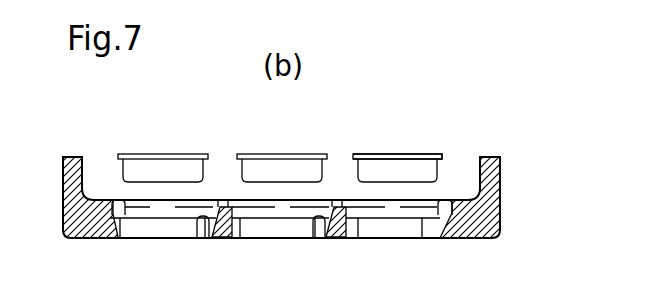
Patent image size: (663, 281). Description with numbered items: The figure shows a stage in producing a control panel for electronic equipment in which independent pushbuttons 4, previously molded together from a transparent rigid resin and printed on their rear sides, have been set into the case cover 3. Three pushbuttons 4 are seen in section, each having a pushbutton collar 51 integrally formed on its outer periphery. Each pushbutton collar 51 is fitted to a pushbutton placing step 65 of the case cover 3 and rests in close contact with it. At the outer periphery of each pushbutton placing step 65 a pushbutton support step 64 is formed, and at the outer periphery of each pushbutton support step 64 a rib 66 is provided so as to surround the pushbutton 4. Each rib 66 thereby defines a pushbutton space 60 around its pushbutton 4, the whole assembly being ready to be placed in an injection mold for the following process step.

The case cover 3 is at (500, 193).
The pushbutton 4 is at (143, 153).
The pushbutton collar 51 is at (444, 155).
The pushbutton space 60 is at (327, 196).
The pushbutton support step 64 is at (121, 212).
The pushbutton placing step 65 is at (199, 228).
The rib 66 is at (219, 200).